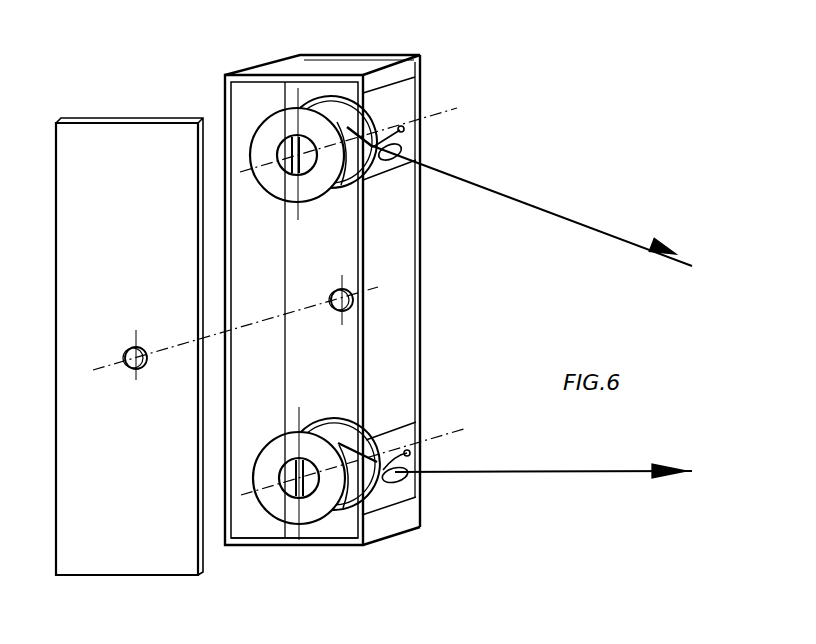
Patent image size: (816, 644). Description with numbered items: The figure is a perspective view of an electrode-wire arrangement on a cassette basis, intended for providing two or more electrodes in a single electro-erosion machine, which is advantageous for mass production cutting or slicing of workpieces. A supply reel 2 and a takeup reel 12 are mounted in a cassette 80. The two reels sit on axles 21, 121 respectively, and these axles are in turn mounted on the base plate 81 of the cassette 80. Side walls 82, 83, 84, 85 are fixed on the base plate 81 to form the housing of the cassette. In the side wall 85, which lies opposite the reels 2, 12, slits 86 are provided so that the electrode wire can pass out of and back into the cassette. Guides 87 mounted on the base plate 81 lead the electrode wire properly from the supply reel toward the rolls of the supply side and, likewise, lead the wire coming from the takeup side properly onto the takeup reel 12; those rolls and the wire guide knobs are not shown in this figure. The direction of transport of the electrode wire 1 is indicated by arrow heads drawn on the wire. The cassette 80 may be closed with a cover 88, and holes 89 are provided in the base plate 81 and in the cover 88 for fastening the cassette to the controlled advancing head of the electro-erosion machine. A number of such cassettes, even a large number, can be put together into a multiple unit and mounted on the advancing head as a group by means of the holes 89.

The electrode wire 1 is at (535, 311).
The supply reel 2 is at (291, 513).
The axle 21 is at (288, 472).
The takeup reel 12 is at (313, 185).
The axle 121 is at (290, 170).
The cassette 80 is at (400, 38).
The base plate 81 is at (292, 232).
The side wall 82 is at (254, 522).
The side wall 83 is at (337, 542).
The side wall 84 is at (292, 62).
The side wall 85 is at (410, 233).
The slits 86 is at (400, 97).
The guides 87 is at (402, 133).
The cover 88 is at (148, 558).
The holes 89 is at (128, 370).